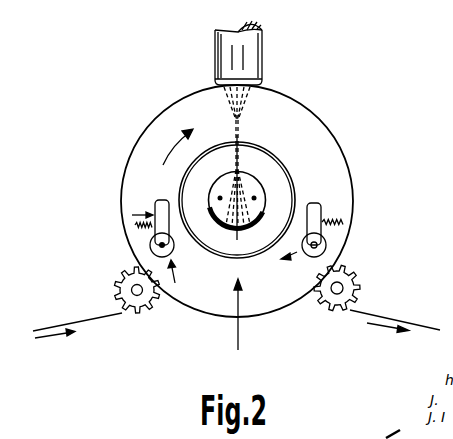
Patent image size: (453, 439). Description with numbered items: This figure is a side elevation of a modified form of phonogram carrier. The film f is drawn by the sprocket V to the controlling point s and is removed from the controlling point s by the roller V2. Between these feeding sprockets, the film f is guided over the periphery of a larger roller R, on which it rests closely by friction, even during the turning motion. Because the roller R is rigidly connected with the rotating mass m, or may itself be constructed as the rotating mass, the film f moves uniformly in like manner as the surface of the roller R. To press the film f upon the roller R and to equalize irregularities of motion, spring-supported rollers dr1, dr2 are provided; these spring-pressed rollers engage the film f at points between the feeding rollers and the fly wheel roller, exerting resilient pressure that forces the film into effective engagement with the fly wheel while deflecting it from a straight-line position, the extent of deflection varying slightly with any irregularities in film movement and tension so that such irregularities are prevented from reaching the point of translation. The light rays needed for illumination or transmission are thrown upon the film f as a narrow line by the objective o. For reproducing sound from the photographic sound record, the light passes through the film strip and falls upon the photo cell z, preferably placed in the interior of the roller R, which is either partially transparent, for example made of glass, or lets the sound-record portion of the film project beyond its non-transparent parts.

The objective o is at (245, 43).
The controlling point s is at (248, 110).
The rotating mass m is at (311, 128).
The roller R is at (283, 178).
The photo cell z is at (265, 202).
The spring-supported roller dr1 is at (160, 245).
The spring-supported roller dr2 is at (323, 242).
The sprocket V is at (125, 280).
The roller V2 is at (348, 287).
The film f is at (97, 318).